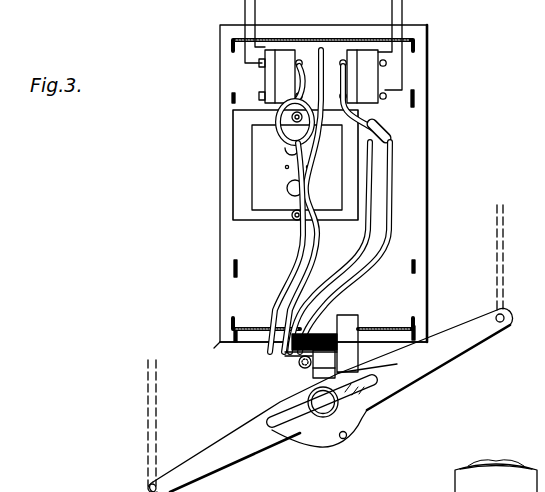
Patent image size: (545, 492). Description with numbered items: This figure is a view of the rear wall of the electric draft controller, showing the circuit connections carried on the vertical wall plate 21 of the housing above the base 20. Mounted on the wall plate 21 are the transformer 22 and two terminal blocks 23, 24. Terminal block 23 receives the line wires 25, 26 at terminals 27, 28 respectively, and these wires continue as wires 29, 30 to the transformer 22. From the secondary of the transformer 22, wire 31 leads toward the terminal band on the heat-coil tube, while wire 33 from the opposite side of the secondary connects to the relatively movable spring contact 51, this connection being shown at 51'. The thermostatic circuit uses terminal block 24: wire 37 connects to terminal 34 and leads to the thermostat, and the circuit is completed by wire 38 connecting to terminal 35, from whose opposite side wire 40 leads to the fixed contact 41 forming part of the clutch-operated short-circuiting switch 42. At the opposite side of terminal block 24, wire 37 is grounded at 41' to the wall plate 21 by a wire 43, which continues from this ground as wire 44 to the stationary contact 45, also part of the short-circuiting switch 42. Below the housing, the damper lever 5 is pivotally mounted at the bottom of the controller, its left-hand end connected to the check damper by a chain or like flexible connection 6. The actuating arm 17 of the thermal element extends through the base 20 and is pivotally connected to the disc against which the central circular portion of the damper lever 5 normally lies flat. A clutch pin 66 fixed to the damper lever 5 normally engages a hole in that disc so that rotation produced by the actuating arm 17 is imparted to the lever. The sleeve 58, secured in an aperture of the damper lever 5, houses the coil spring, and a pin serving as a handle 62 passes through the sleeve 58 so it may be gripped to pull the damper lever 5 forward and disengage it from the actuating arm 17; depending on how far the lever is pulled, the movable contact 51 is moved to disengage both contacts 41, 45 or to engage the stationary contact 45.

The damper lever 5 is at (226, 443).
The flexible connection 6 is at (150, 445).
The actuating arm 17 is at (358, 318).
The base 20 is at (223, 343).
The vertical wall plate 21 is at (225, 305).
The transformer 22 is at (245, 198).
The terminal block 23 is at (277, 50).
The terminal block 24 is at (358, 50).
The line wire 25 is at (247, 17).
The line wire 26 is at (259, 60).
The terminal 27 is at (262, 97).
The terminal 28 is at (262, 75).
The wire 29 is at (290, 123).
The wire 30 is at (288, 150).
The wire 31 is at (322, 176).
The wire 33 is at (298, 251).
The terminal 34 is at (386, 62).
The terminal 35 is at (386, 96).
The wire 37 is at (403, 20).
The wire 38 is at (403, 72).
The wire 40 is at (390, 208).
The fixed contact 41 is at (311, 353).
The ground connection 41' is at (438, 139).
The clutch-operated short-circuiting switch 42 is at (292, 350).
The wire 43 is at (385, 123).
The wire 44 is at (370, 238).
The stationary contact 45 is at (297, 370).
The movable spring contact 51 is at (377, 363).
The connection of wire 33 to spring contact 51' is at (244, 364).
The sleeve 58 is at (323, 418).
The handle 62 is at (281, 434).
The clutch pin 66 is at (346, 436).